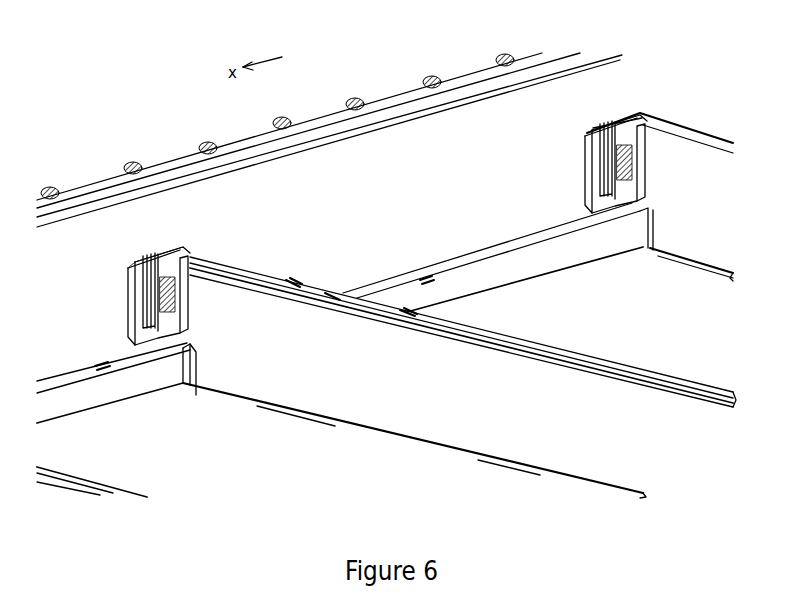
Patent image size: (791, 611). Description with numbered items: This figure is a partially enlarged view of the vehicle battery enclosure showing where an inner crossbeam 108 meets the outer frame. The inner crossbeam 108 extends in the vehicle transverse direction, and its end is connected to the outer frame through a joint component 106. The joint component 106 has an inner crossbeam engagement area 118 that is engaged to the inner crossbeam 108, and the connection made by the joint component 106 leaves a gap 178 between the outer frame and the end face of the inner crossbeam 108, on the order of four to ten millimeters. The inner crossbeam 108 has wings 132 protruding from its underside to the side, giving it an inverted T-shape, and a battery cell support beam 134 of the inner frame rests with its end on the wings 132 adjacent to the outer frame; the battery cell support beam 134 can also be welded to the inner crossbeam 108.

The joint component 106 is at (153, 240).
The inner crossbeam engagement area 118 is at (184, 290).
The gap 178 is at (150, 258).
The inner crossbeam 108 is at (334, 438).
The wing 132 is at (220, 397).
The battery cell support beam 134 is at (87, 395).